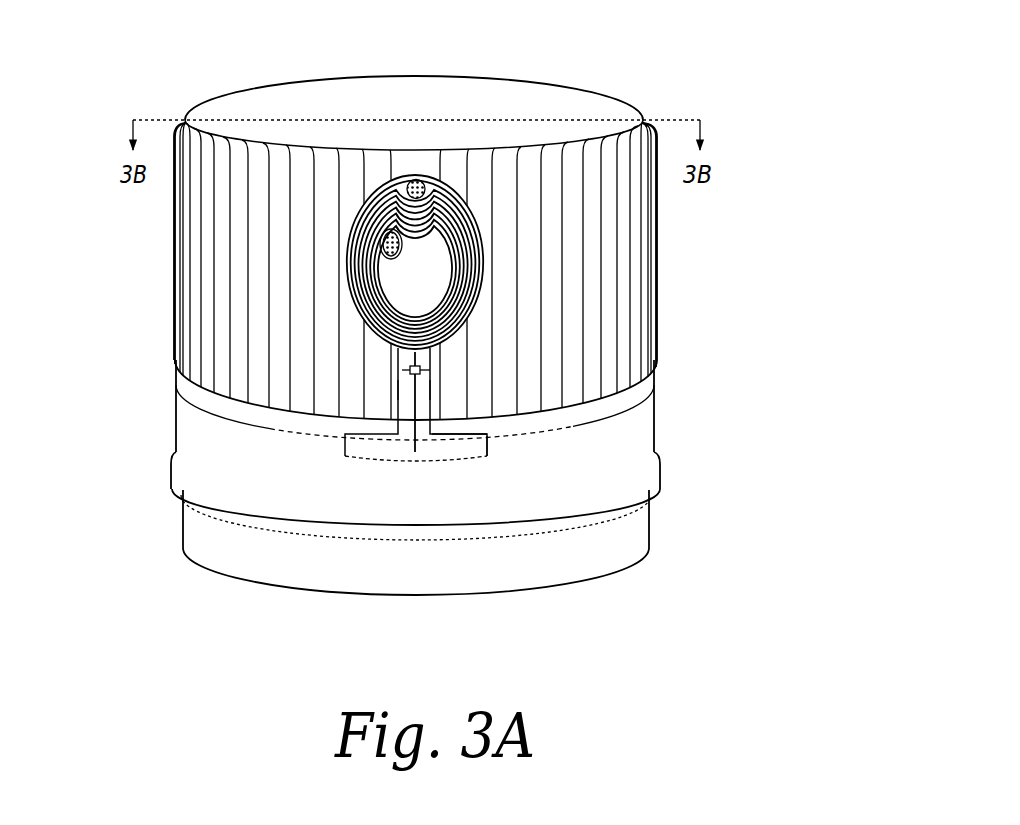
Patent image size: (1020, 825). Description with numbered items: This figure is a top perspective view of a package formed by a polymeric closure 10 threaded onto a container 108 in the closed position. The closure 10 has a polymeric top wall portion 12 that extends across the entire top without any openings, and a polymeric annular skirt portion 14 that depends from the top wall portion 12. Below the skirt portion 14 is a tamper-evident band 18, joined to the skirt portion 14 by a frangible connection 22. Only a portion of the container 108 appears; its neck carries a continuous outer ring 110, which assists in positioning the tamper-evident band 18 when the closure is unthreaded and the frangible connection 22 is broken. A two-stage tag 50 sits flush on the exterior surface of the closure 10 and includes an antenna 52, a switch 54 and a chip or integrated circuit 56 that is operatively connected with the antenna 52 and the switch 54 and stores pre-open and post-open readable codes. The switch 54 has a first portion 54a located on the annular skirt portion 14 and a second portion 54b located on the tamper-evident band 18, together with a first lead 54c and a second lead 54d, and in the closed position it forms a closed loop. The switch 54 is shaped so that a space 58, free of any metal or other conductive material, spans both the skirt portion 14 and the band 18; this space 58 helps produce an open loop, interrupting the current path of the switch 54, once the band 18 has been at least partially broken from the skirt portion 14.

The polymeric closure 10 is at (217, 77).
The polymeric top wall portion 12 is at (300, 83).
The polymeric annular skirt portion 14 is at (668, 283).
The tamper-evident band 18 is at (659, 413).
The frangible connection 22 is at (192, 400).
The 2-stage tag 50 is at (340, 258).
The antenna 52 is at (416, 166).
The switch 54 is at (342, 463).
The first portion 54a is at (487, 437).
The second portion 54b is at (470, 452).
The first lead 54c is at (408, 386).
The second lead 54d is at (423, 386).
The chip or integrated circuit 56 is at (430, 367).
The space 58 is at (417, 455).
The container 108 is at (165, 545).
The continuous outer ring 110 is at (165, 481).